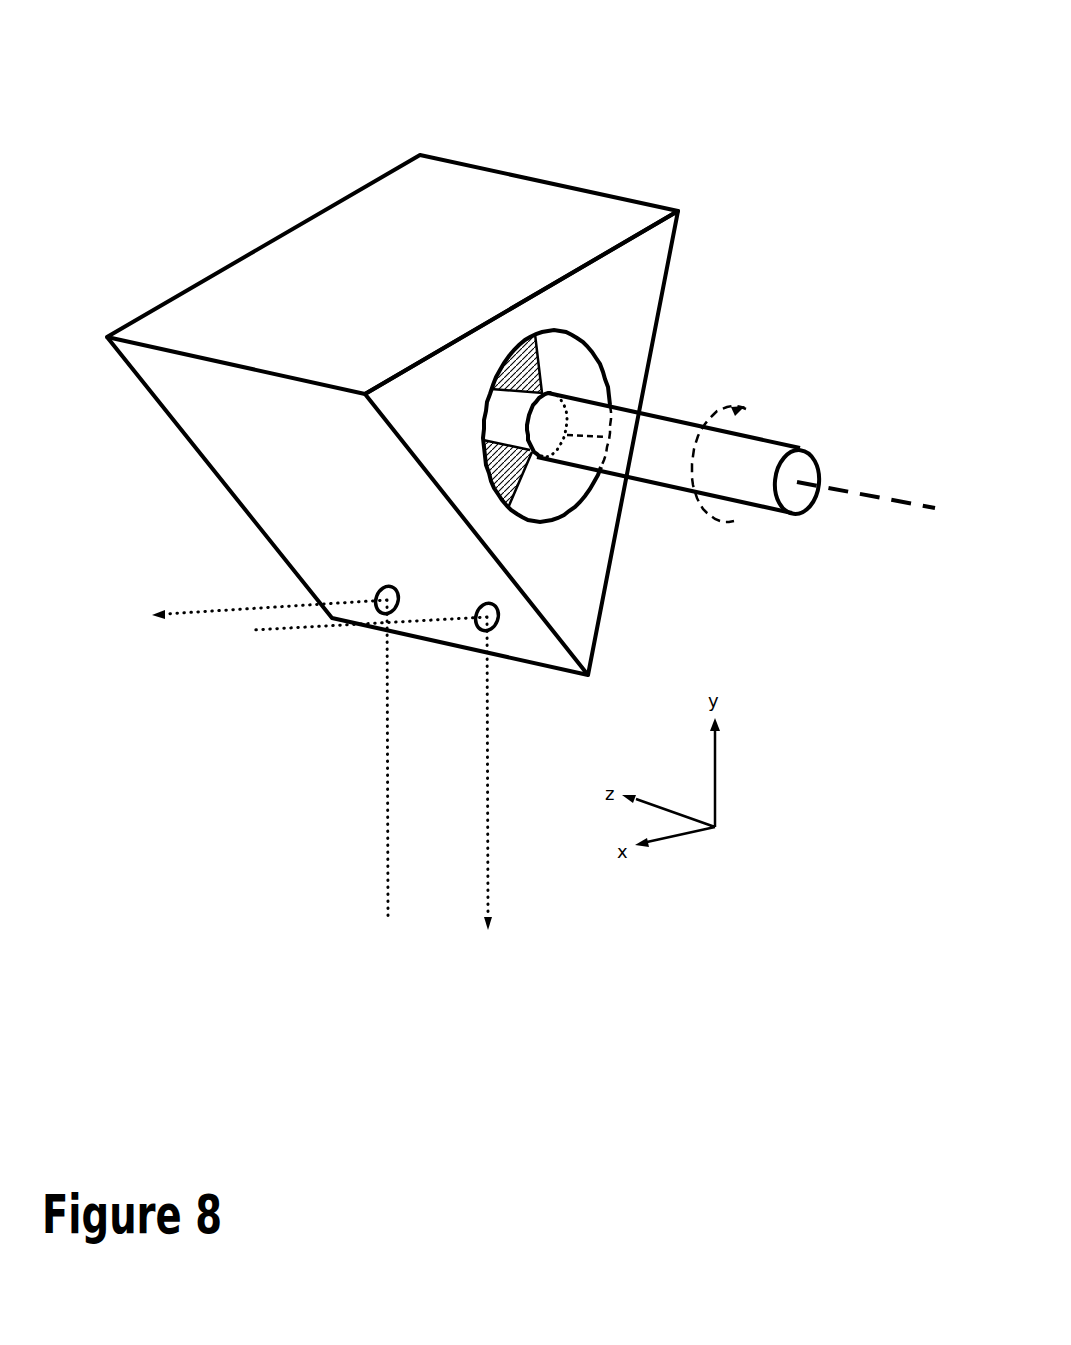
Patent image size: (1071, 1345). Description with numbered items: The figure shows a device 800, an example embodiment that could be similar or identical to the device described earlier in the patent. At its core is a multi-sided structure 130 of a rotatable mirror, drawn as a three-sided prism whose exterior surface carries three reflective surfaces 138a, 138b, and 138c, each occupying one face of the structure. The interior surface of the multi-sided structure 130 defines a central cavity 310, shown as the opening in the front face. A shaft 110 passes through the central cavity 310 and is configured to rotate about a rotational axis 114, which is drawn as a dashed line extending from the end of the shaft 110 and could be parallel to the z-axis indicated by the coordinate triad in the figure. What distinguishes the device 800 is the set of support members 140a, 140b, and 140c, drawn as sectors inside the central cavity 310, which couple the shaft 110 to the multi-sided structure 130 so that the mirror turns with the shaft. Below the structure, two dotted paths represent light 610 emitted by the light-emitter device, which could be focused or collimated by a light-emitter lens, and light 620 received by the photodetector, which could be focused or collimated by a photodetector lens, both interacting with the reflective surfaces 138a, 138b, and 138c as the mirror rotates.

The device 800 is at (728, 82).
The multi-sided structure 130 is at (661, 205).
The reflective surface 138a is at (230, 491).
The reflective surface 138b is at (674, 338).
The reflective surface 138c is at (255, 250).
The support member 140a is at (513, 503).
The support member 140b is at (583, 437).
The support member 140c is at (537, 353).
The shaft 110 is at (783, 442).
The rotational axis 114 is at (842, 487).
The central cavity 310 is at (592, 384).
The light 610 is at (388, 867).
The light 620 is at (488, 727).